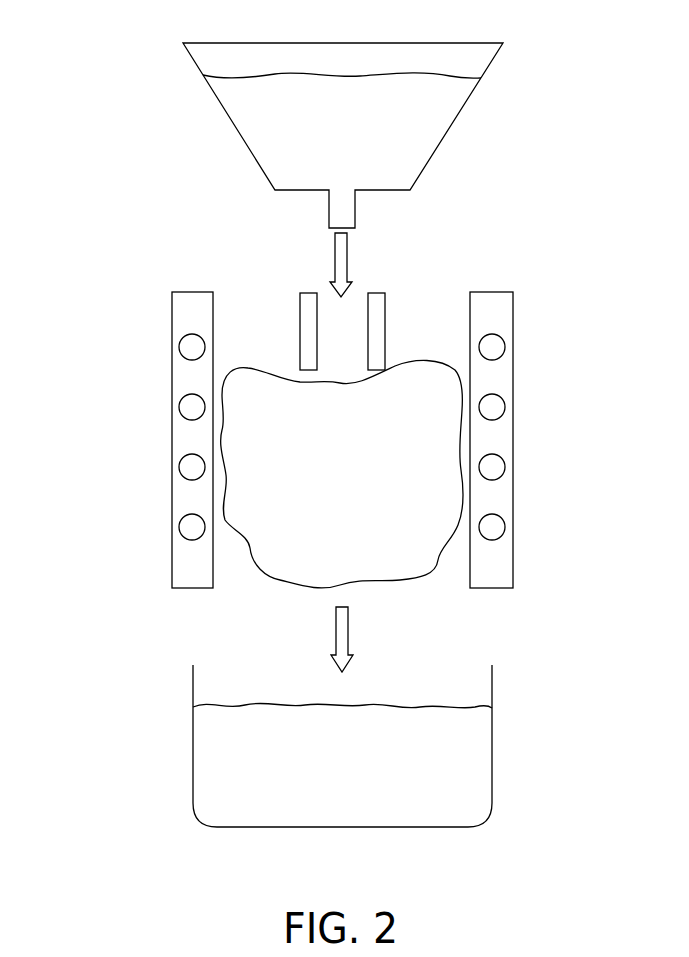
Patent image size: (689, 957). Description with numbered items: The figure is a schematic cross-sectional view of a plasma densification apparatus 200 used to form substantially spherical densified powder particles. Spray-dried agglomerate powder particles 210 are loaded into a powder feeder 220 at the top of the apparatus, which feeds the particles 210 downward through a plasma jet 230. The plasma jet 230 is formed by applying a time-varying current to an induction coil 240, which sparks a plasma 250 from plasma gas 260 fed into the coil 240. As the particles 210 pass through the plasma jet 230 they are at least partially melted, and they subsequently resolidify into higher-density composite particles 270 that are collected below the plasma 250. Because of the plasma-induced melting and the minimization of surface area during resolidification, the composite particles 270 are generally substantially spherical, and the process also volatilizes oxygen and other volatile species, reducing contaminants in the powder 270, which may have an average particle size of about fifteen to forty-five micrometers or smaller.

The plasma densification apparatus 200 is at (148, 68).
The agglomerate powder particles 210 is at (363, 141).
The powder feeder 220 is at (490, 63).
The plasma jet 230 is at (142, 419).
The induction coil 240 is at (501, 337).
The plasma 250 is at (310, 585).
The plasma gas 260 is at (430, 270).
The higher-density composite particles 270 is at (363, 765).